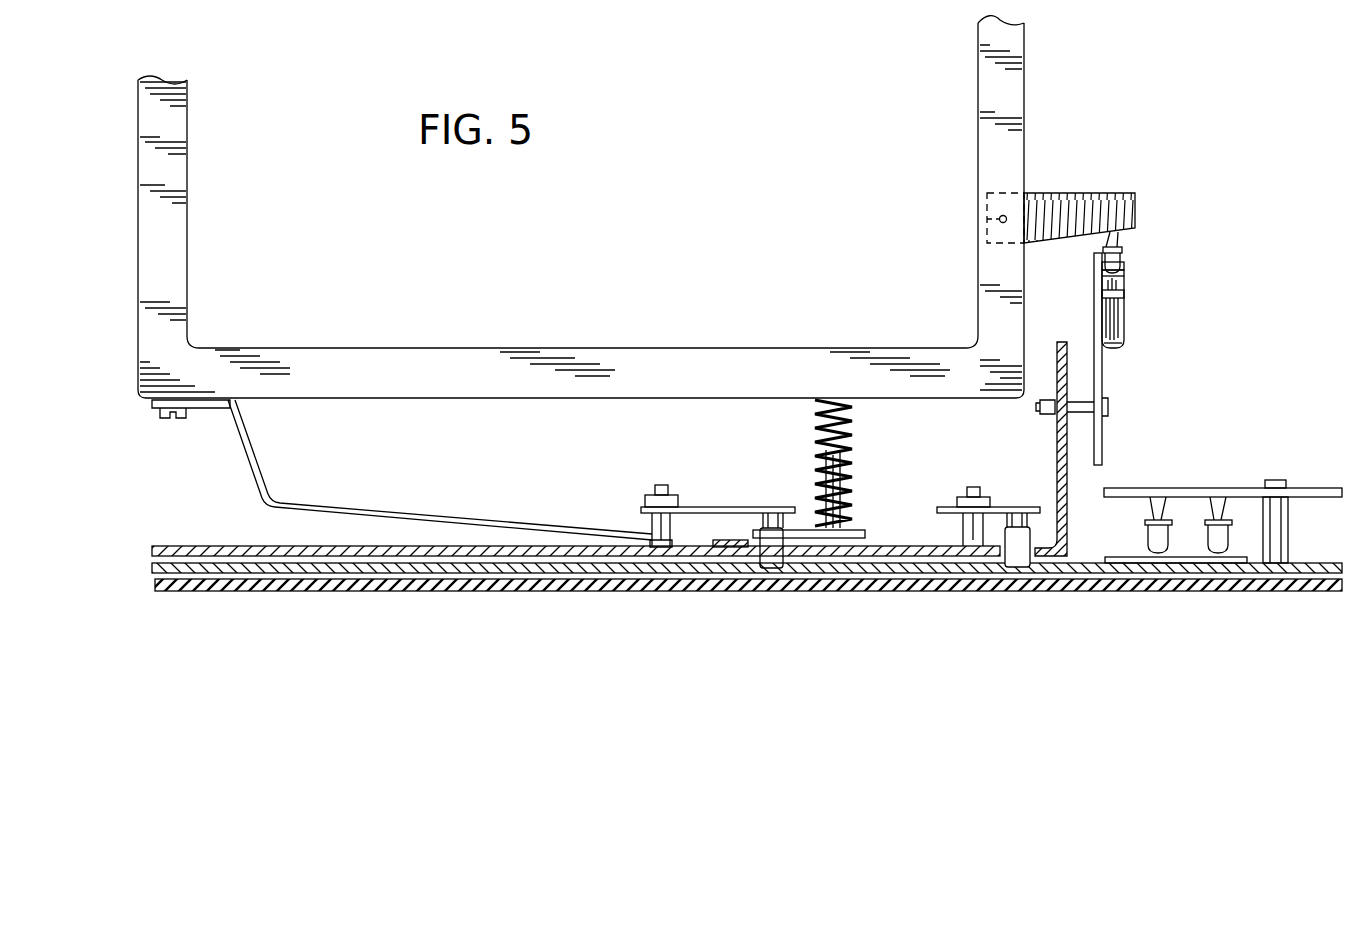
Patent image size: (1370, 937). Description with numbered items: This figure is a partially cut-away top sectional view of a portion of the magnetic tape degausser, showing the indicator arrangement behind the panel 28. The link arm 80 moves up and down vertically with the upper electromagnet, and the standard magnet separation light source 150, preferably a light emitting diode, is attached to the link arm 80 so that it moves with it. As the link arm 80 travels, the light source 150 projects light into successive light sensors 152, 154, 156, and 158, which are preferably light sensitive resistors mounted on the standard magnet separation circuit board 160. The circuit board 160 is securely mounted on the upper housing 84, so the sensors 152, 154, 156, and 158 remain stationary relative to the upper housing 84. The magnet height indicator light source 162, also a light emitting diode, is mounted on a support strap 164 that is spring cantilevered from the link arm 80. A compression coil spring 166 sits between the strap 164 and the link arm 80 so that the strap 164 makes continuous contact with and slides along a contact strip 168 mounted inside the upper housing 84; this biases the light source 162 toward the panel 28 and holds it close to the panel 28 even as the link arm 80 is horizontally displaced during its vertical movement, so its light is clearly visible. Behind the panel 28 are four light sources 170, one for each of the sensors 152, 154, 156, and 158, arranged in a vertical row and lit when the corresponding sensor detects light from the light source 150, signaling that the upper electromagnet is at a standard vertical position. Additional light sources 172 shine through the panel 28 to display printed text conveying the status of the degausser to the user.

The panel 28 is at (408, 590).
The link arm 80 is at (978, 140).
The upper housing 84 is at (1057, 446).
The standard magnet separation light source 150 is at (1122, 248).
The light sensor 152 is at (1124, 303).
The light sensor 154 is at (1100, 290).
The light sensor 156 is at (1103, 268).
The light sensor 158 is at (1122, 262).
The standard magnet separation circuit board 160 is at (1097, 432).
The magnet height indicator light source 162 is at (772, 563).
The support strap 164 is at (425, 515).
The compression coil spring 166 is at (855, 440).
The contact strip 168 is at (725, 540).
The light sources 170 is at (1018, 560).
The light sources 172 is at (1215, 548).